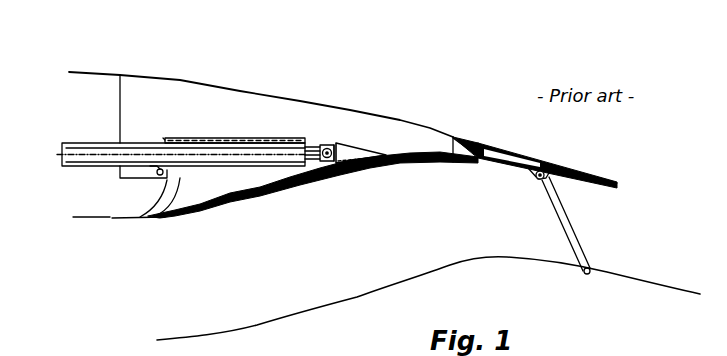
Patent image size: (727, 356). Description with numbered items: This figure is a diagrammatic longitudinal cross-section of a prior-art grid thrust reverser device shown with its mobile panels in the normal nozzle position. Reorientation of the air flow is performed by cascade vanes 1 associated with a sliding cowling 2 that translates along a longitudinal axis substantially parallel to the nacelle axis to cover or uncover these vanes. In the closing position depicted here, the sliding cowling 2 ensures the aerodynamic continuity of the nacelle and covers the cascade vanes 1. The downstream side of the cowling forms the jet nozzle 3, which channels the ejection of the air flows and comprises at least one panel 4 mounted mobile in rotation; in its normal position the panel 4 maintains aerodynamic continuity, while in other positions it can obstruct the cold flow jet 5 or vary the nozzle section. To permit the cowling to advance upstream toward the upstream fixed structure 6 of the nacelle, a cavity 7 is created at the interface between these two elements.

The cascade vanes 1 is at (313, 140).
The sliding cowling 2 is at (203, 78).
The jet nozzle 3 is at (556, 154).
The panel 4 is at (609, 181).
The cold flow jet 5 is at (313, 298).
The upstream fixed structure 6 is at (82, 201).
The cavity 7 is at (96, 69).